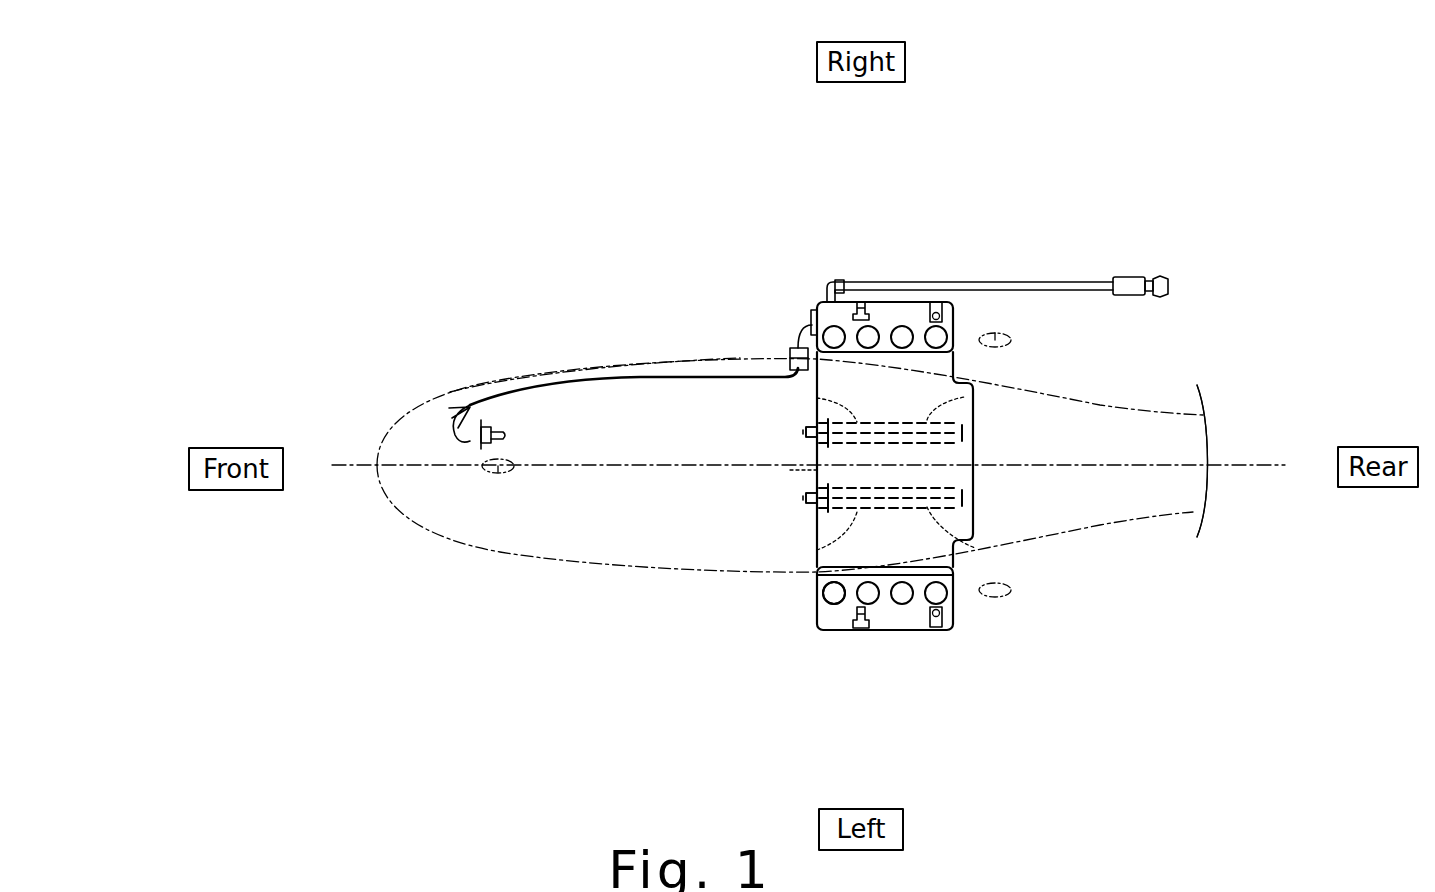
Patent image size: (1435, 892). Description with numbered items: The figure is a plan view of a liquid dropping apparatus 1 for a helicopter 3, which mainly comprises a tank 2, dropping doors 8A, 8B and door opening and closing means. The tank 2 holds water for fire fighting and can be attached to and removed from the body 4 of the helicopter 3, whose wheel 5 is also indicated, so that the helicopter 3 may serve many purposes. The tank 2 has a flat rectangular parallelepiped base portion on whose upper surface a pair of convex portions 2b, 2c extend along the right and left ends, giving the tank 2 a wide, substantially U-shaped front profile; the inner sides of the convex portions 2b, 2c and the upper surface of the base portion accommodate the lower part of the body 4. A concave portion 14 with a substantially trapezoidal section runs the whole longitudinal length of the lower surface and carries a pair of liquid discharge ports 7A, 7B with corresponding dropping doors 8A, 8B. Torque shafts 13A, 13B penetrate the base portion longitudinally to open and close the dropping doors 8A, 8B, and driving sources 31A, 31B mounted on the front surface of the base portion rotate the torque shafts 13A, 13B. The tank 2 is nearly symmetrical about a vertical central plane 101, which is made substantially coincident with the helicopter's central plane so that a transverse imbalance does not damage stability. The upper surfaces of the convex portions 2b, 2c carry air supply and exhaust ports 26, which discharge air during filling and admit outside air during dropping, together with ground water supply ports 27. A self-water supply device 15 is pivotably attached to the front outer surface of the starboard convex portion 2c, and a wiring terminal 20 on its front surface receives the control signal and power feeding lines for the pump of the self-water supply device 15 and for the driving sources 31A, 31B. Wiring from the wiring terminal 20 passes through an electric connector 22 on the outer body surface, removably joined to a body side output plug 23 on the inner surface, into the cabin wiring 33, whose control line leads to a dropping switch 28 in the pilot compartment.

The liquid dropping apparatus 1 is at (977, 448).
The tank 2 is at (893, 302).
The convex portion 2b is at (915, 625).
The starboard convex portion 2c is at (912, 305).
The helicopter 3 is at (410, 412).
The body 4 is at (455, 385).
The wheel 5 is at (497, 474).
The liquid discharge port 7A is at (817, 550).
The liquid discharge port 7B is at (817, 398).
The dropping door 8A is at (805, 503).
The dropping door 8B is at (806, 428).
The torque shaft 13A is at (975, 548).
The torque shaft 13B is at (965, 397).
The concave portion 14 is at (805, 468).
The self-water supply device 15 is at (1050, 283).
The wiring terminal 20 is at (810, 322).
The electric connector 22 is at (792, 348).
The body side output plug 23 is at (790, 358).
The air supply and exhaust port 26 is at (836, 604).
The ground water supply port 27 is at (867, 616).
The dropping switch 28 is at (488, 420).
The driving source 31A is at (805, 498).
The driving source 31B is at (805, 432).
The cabin wiring 33 is at (563, 383).
The vertical central plane 101 is at (1248, 463).